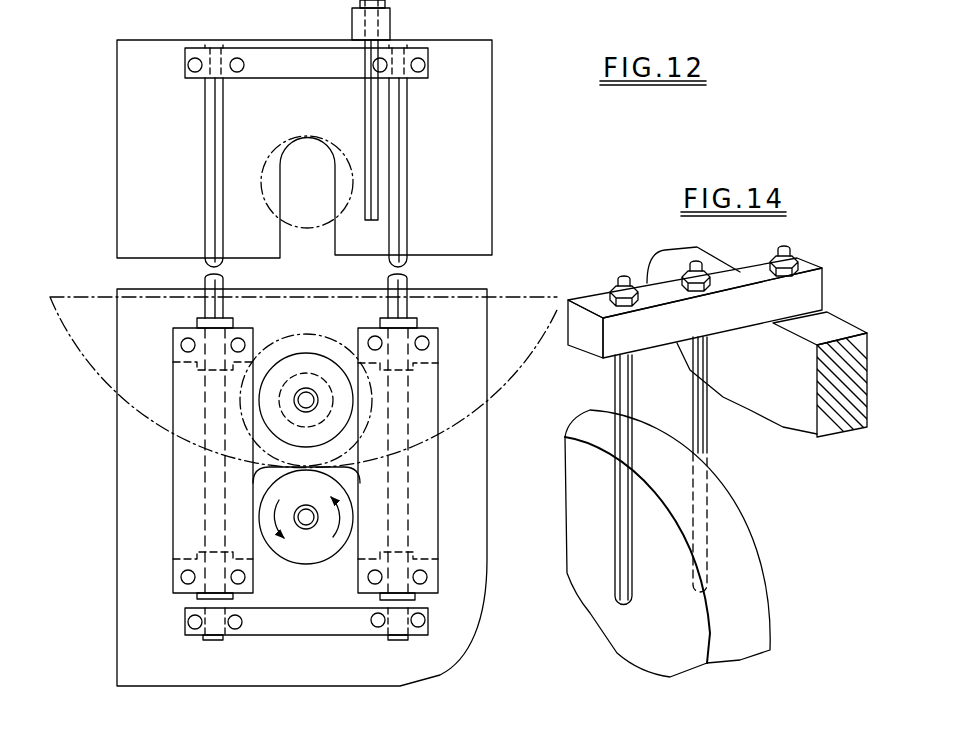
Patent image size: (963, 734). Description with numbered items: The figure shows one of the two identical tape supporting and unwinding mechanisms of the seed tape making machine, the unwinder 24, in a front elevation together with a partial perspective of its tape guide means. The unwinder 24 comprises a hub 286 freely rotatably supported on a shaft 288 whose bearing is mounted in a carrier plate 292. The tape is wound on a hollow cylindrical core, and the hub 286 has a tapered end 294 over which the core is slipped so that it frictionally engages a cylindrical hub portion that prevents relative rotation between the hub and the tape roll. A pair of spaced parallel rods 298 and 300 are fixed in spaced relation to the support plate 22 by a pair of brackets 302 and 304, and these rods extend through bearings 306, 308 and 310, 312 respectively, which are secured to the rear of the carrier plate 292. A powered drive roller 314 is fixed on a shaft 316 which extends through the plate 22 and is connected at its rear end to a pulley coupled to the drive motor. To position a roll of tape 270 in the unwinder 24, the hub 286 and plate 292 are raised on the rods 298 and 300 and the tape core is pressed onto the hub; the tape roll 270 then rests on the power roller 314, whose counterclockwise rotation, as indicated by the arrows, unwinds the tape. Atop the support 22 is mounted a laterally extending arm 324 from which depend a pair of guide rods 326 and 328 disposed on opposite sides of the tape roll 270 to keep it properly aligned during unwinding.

In FIG. 12, the support plate 22 is at (477, 193).
In FIG. 14, the support plate 22 is at (830, 440).
In FIG. 12, the unwinder 24 is at (301, 640).
In FIG. 12, the roll of tape 270 is at (103, 365).
In FIG. 14, the roll of tape 270 is at (758, 613).
In FIG. 12, the hub 286 is at (316, 235).
In FIG. 12, the shaft 288 is at (303, 392).
In FIG. 12, the carrier plate 292 is at (178, 542).
In FIG. 12, the tapered end 294 is at (273, 427).
In FIG. 12, the rod 298 is at (210, 227).
In FIG. 12, the rod 300 is at (408, 233).
In FIG. 12, the bracket 302 is at (288, 65).
In FIG. 12, the bracket 304 is at (345, 627).
In FIG. 12, the bearing 306 is at (197, 322).
In FIG. 12, the bearing 308 is at (197, 598).
In FIG. 12, the bearing 310 is at (417, 321).
In FIG. 12, the bearing 312 is at (413, 598).
In FIG. 12, the powered drive roller 314 is at (297, 555).
In FIG. 12, the shaft 316 is at (302, 523).
In FIG. 12, the laterally extending arm 324 is at (387, 25).
In FIG. 14, the laterally extending arm 324 is at (588, 343).
In FIG. 12, the guide rod 326 is at (368, 116).
In FIG. 14, the guide rod 326 is at (620, 400).
In FIG. 14, the guide rod 328 is at (697, 423).